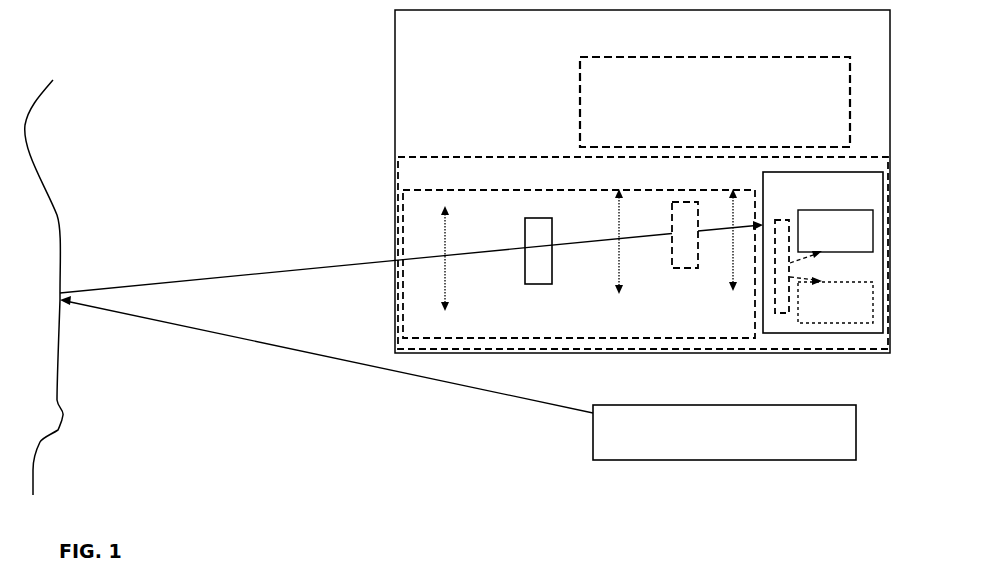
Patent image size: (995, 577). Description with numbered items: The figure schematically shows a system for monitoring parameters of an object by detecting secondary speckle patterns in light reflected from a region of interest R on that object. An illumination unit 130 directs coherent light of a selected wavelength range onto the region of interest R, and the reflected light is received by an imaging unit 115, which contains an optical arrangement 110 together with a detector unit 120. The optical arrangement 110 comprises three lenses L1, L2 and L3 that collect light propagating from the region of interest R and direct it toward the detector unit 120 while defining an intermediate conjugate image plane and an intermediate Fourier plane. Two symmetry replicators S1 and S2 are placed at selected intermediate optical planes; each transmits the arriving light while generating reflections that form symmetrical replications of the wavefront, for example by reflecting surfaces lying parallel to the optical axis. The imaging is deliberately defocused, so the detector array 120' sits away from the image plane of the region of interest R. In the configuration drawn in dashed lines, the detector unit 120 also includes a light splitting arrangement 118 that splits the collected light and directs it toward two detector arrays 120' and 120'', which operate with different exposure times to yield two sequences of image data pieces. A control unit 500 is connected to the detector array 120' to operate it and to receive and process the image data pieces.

The region of interest R is at (74, 287).
The control unit 500 is at (715, 102).
The imaging unit 115 is at (525, 157).
The optical arrangement 110 is at (525, 190).
The lens L1 is at (457, 258).
The symmetry replicator S1 is at (537, 268).
The lens L2 is at (611, 262).
The symmetry replicator S2 is at (685, 253).
The lens L3 is at (725, 262).
The detector unit 120 is at (823, 252).
The light splitting arrangement 118 is at (782, 313).
The detector array 120' is at (835, 231).
The detector array 120'' is at (835, 302).
The illumination unit 130 is at (458, 378).